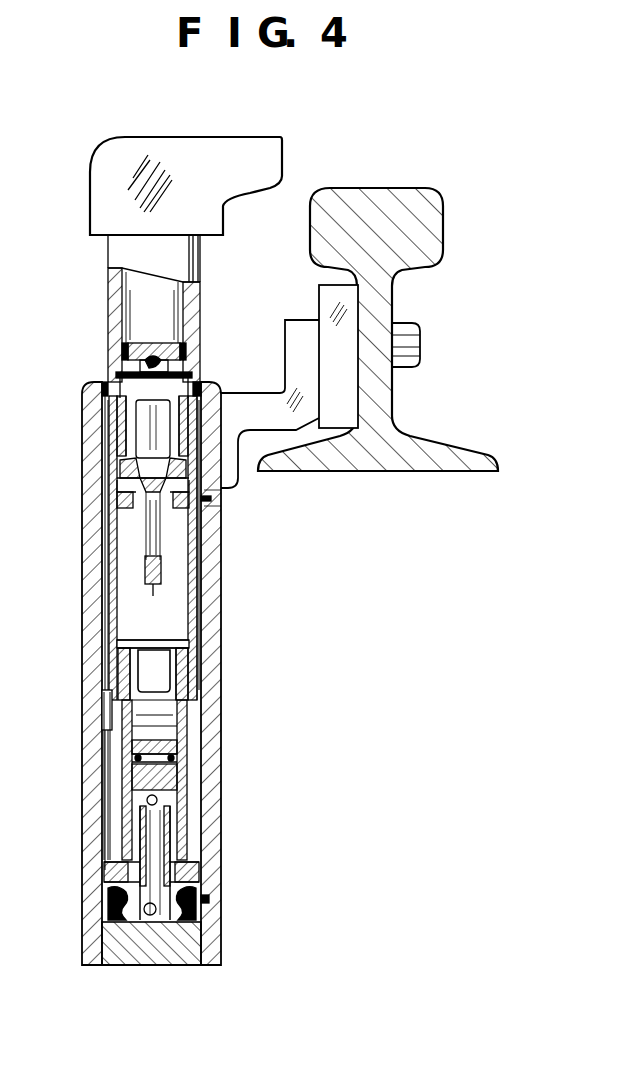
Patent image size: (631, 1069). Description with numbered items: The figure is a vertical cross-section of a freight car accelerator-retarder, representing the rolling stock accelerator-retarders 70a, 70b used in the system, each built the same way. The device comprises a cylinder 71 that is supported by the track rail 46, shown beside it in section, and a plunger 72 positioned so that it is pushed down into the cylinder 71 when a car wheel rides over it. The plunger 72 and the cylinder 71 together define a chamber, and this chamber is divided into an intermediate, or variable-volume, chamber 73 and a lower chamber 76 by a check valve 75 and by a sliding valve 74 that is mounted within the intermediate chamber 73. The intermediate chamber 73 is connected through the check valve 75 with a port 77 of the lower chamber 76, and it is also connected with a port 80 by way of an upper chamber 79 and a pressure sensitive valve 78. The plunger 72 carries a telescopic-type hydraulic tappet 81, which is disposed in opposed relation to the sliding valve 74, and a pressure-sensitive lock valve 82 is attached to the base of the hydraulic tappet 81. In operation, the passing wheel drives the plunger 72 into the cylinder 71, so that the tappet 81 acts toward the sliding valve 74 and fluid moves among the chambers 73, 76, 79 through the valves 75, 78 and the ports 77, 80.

The rolling stock accelerator-retarder 70a is at (348, 146).
The rolling stock accelerator-retarder 70b is at (402, 146).
The plunger 72 is at (198, 270).
The pressure sensitive valve 78 is at (190, 383).
The pressure-sensitive lock valve 82 is at (150, 440).
The port 80 is at (212, 512).
The upper chamber 79 is at (97, 545).
The cylinder 71 is at (216, 565).
The telescopic-type hydraulic tappet 81 is at (153, 588).
The intermediate chamber 73 is at (108, 742).
The sliding valve 74 is at (180, 752).
The check valve 75 is at (101, 898).
The port of the lower chamber 77 is at (212, 905).
The lower chamber 76 is at (100, 908).
The track rail 46 is at (392, 470).